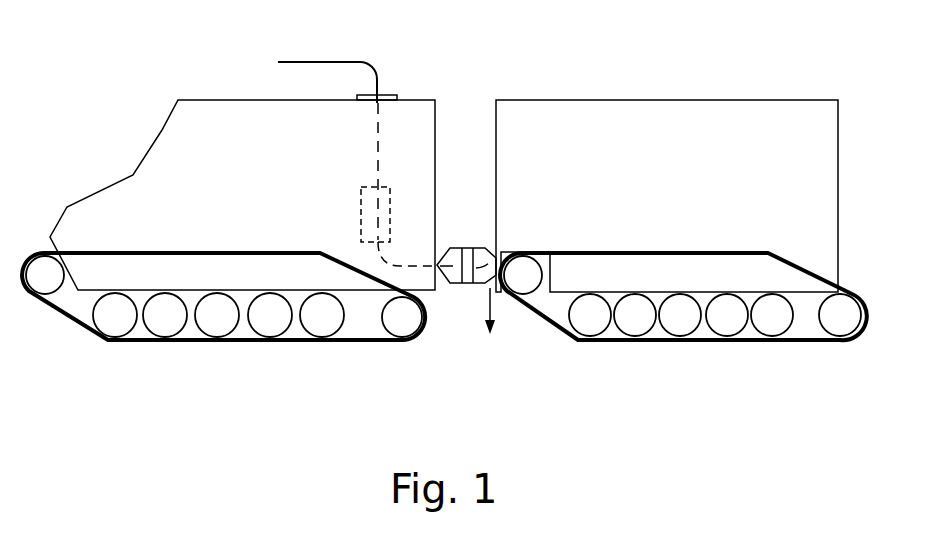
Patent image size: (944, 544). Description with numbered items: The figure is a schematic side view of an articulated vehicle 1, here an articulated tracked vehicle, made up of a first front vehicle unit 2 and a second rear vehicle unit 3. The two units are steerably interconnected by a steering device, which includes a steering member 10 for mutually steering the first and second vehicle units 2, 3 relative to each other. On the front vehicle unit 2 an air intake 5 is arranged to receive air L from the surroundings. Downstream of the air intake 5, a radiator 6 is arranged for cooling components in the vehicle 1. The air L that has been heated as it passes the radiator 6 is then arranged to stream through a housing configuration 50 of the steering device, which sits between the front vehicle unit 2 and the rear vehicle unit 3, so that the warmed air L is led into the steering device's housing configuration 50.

The articulated vehicle 1 is at (480, 48).
The first front vehicle unit 2 is at (157, 128).
The second rear vehicle unit 3 is at (648, 92).
The air intake 5 is at (386, 95).
The radiator 6 is at (361, 208).
The steering member 10 is at (465, 295).
The housing configuration 50 is at (455, 248).
The air L is at (316, 77).